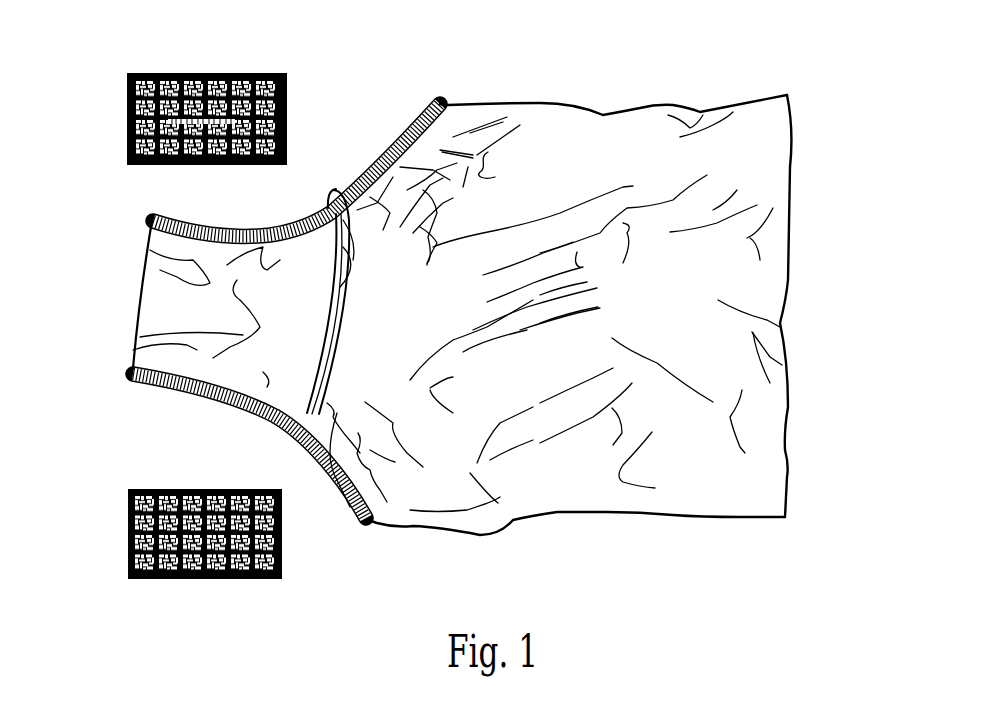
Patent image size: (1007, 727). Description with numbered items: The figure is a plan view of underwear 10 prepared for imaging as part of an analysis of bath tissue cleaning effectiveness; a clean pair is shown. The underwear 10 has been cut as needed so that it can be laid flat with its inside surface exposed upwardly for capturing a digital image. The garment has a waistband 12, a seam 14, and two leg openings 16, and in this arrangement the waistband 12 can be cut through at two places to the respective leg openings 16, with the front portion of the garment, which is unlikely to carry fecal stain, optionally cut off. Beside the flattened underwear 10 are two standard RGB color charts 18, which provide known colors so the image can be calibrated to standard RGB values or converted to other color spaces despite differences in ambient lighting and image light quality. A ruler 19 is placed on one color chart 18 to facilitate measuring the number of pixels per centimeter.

The underwear 10 is at (692, 153).
The waistband 12 is at (788, 278).
The seam 14 is at (340, 290).
The leg openings 16 is at (240, 229).
The RGB color charts 18 is at (170, 113).
The ruler 19 is at (102, 162).